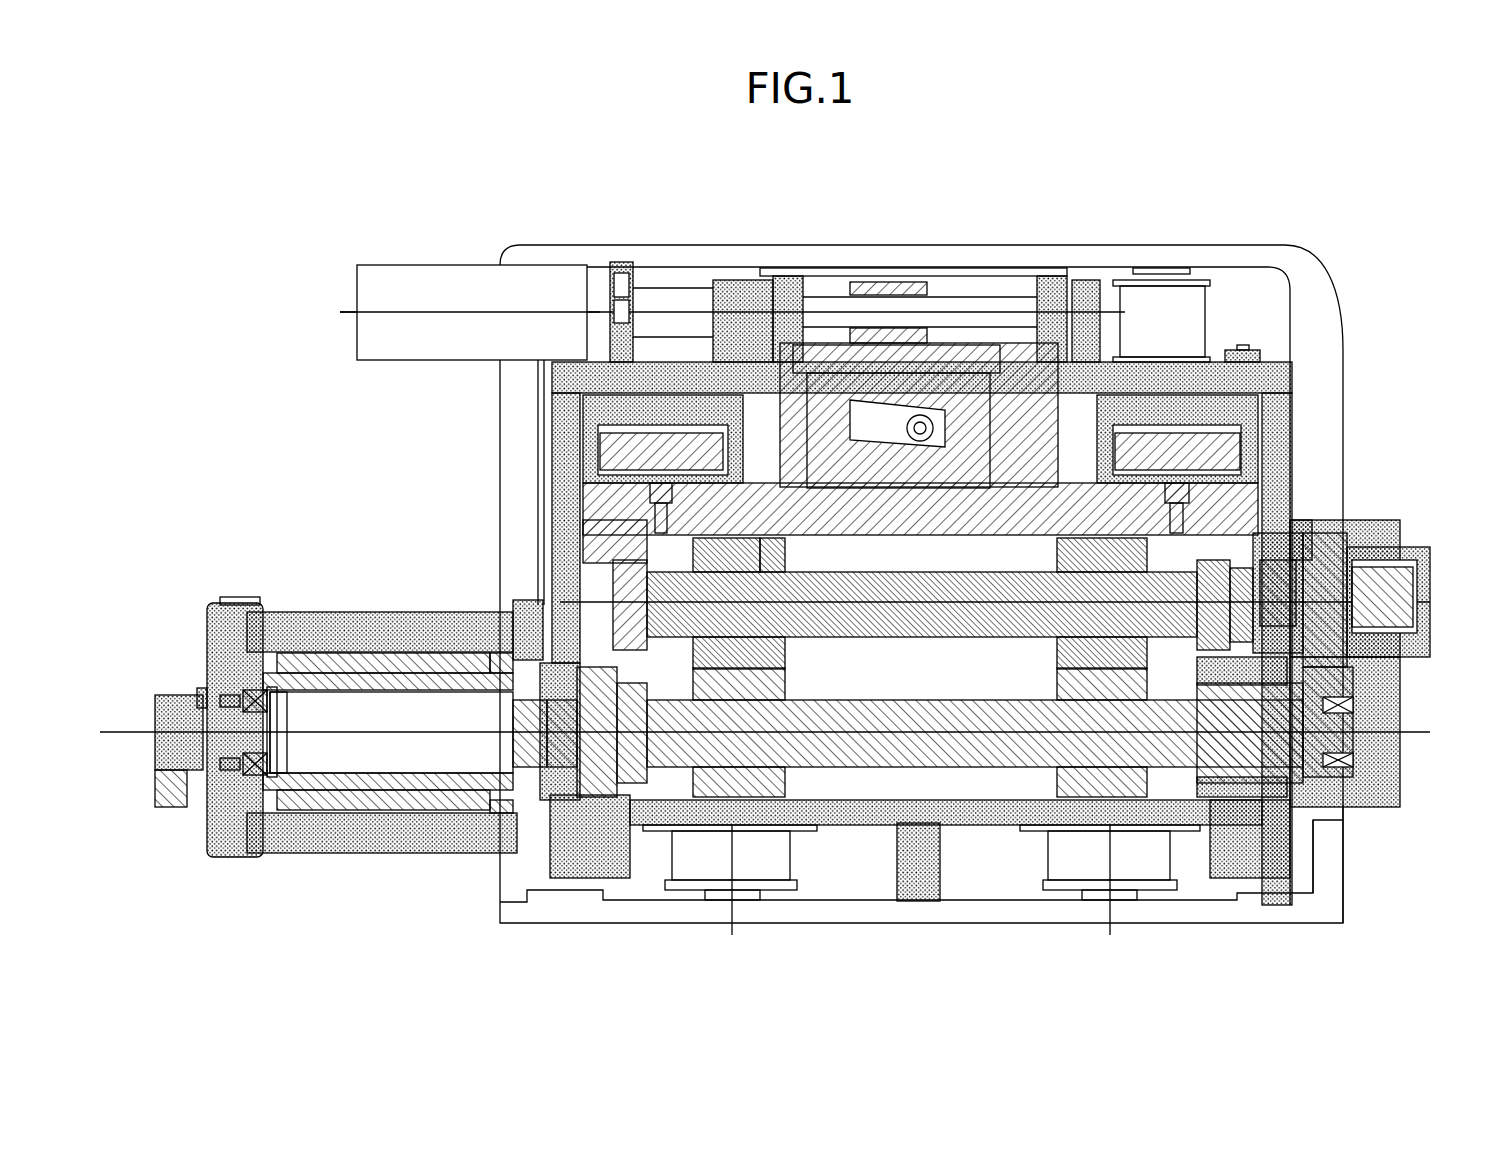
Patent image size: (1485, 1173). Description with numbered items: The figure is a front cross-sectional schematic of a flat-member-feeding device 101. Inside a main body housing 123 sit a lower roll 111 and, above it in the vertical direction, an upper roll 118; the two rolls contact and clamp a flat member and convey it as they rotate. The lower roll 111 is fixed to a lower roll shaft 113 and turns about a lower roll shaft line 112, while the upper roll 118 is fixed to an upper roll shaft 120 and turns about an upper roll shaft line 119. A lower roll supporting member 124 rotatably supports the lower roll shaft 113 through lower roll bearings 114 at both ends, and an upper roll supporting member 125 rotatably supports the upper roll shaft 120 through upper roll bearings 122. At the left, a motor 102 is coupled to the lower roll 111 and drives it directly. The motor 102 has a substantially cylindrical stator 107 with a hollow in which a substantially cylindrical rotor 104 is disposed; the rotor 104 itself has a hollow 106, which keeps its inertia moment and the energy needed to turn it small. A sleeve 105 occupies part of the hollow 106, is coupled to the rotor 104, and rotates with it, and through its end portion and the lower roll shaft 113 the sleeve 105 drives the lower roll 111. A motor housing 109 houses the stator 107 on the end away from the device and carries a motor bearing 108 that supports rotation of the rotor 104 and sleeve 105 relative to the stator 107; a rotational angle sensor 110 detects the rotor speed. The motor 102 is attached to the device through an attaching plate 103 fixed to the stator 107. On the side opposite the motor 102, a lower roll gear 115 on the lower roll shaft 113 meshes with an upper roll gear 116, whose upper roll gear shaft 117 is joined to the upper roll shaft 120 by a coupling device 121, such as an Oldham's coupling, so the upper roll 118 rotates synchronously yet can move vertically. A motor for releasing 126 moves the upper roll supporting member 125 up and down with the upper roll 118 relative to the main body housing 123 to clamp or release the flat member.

The flat-member-feeding device 101 is at (978, 219).
The motor 102 is at (340, 717).
The attaching plate 103 is at (520, 855).
The rotor 104 is at (468, 665).
The sleeve 105 is at (372, 655).
The hollow 106 is at (425, 757).
The stator 107 is at (300, 830).
The motor bearing 108 is at (247, 673).
The motor housing 109 is at (232, 848).
The rotational angle sensor 110 is at (178, 715).
The lower roll 111 is at (1127, 805).
The lower roll shaft line 112 is at (880, 735).
The lower roll shaft 113 is at (573, 823).
The lower roll bearings 114 is at (603, 823).
The lower roll gear 115 is at (1345, 808).
The upper roll gear 116 is at (1353, 617).
The upper roll gear shaft 117 is at (1373, 677).
The upper roll 118 is at (1180, 462).
The upper roll shaft line 119 is at (1120, 475).
The upper roll shaft 120 is at (1253, 493).
The coupling device 121 is at (1340, 556).
The upper roll bearings 122 is at (1270, 565).
The main body housing 123 is at (1067, 247).
The lower roll supporting member 124 is at (1000, 815).
The upper roll supporting member 125 is at (1113, 427).
The motor for releasing 126 is at (437, 283).